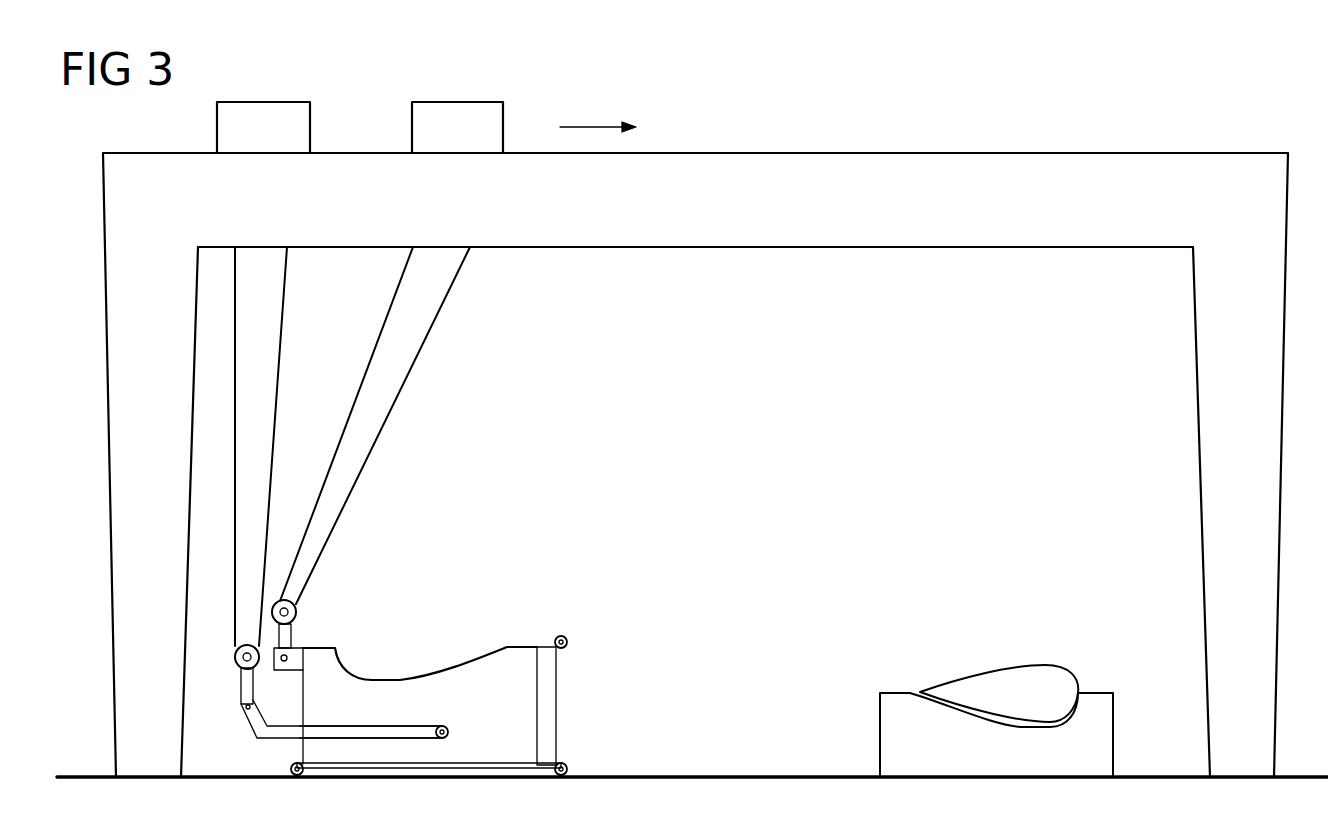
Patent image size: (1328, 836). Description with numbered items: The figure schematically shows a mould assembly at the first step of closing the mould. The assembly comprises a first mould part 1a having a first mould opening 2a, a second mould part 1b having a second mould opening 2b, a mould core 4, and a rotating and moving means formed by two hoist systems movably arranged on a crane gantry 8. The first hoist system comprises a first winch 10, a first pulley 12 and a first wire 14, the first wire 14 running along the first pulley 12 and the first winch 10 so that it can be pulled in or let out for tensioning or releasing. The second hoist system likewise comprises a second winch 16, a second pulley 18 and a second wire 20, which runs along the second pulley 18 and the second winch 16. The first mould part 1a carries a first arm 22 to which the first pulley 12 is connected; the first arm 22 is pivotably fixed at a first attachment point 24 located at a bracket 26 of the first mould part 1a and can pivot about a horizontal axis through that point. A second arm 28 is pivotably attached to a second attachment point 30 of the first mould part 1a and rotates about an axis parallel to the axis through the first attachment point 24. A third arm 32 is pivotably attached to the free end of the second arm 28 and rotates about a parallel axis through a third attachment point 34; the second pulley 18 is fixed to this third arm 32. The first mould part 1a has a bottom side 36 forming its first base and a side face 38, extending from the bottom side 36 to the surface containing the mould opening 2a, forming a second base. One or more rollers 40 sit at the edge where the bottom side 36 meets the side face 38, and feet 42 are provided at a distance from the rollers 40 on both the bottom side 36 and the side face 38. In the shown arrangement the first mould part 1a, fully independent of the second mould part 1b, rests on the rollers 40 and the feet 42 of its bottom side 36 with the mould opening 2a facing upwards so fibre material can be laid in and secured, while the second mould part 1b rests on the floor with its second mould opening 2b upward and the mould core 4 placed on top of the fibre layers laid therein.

The first mould part 1a is at (538, 608).
The second mould part 1b is at (872, 668).
The first mould opening 2a is at (433, 645).
The second mould opening 2b is at (1080, 680).
The mould core 4 is at (1023, 675).
The crane gantry 8 is at (850, 237).
The first winch 10 is at (458, 112).
The first pulley 12 is at (300, 606).
The first wire 14 is at (400, 400).
The second winch 16 is at (267, 112).
The second pulley 18 is at (237, 652).
The second wire 20 is at (283, 330).
The first arm 22 is at (292, 636).
The first attachment point 24 is at (286, 672).
The bracket 26 is at (300, 660).
The second arm 28 is at (370, 728).
The second attachment point 30 is at (450, 734).
The third arm 32 is at (242, 688).
The third attachment point 34 is at (244, 718).
The bottom side 36 is at (413, 766).
The side face 38 is at (562, 713).
The rollers 40 is at (570, 769).
The feet 42 is at (570, 641).